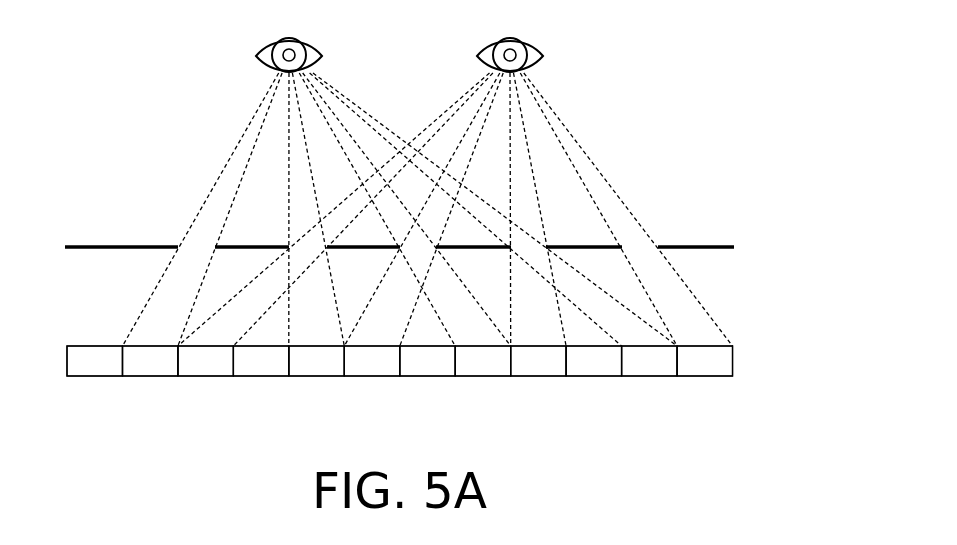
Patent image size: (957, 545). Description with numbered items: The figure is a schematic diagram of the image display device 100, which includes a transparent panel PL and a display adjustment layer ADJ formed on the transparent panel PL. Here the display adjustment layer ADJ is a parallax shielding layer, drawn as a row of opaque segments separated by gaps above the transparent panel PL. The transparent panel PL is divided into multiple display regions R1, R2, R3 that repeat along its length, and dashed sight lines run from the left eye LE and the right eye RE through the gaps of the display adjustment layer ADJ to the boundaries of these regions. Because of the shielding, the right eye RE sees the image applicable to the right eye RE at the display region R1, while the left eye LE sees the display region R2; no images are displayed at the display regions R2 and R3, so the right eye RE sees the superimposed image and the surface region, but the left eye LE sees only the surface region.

The left eye LE is at (337, 29).
The right eye RE is at (555, 28).
The display adjustment layer ADJ is at (695, 248).
The transparent panel PL is at (435, 360).
The image display device 100 is at (461, 312).
The display region R1 is at (455, 379).
The display region R2 is at (400, 379).
The display region R3 is at (344, 379).